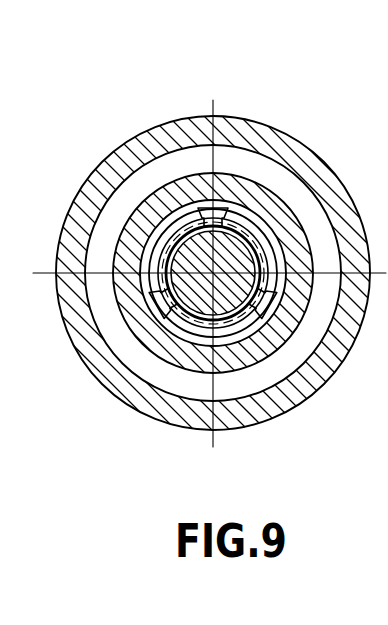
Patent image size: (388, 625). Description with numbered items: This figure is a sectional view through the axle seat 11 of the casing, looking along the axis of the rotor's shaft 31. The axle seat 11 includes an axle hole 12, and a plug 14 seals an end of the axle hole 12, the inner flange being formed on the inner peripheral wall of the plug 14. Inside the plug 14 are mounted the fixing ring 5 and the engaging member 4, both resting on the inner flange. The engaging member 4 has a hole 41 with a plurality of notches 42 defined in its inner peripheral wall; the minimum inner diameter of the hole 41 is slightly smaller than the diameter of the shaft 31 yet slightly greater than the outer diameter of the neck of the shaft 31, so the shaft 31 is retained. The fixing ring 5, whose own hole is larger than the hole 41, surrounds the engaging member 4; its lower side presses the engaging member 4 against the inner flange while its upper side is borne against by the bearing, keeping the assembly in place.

The engaging member 4 is at (192, 330).
The fixing ring 5 is at (148, 220).
The axle seat 11 is at (192, 127).
The axle hole 12 is at (168, 147).
The plug 14 is at (263, 172).
The shaft 31 is at (229, 240).
The hole 41 is at (233, 318).
The notches 42 is at (162, 298).